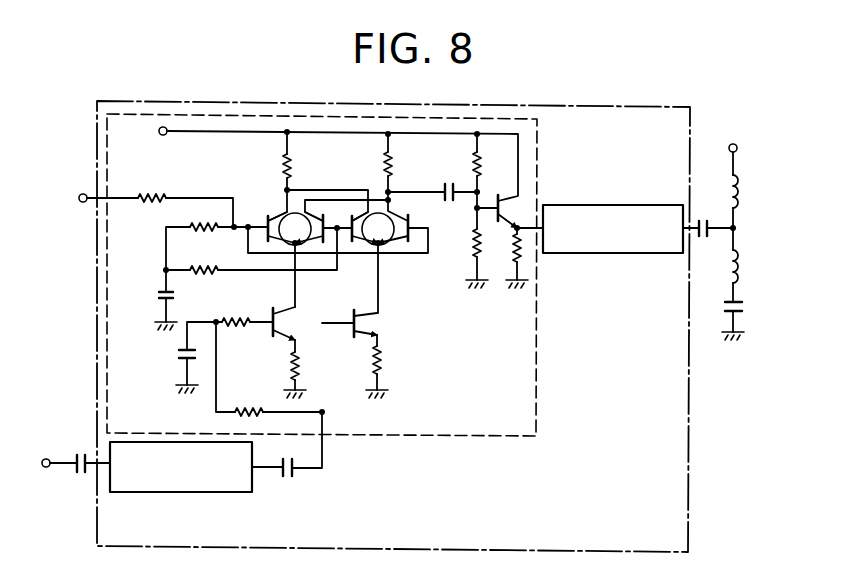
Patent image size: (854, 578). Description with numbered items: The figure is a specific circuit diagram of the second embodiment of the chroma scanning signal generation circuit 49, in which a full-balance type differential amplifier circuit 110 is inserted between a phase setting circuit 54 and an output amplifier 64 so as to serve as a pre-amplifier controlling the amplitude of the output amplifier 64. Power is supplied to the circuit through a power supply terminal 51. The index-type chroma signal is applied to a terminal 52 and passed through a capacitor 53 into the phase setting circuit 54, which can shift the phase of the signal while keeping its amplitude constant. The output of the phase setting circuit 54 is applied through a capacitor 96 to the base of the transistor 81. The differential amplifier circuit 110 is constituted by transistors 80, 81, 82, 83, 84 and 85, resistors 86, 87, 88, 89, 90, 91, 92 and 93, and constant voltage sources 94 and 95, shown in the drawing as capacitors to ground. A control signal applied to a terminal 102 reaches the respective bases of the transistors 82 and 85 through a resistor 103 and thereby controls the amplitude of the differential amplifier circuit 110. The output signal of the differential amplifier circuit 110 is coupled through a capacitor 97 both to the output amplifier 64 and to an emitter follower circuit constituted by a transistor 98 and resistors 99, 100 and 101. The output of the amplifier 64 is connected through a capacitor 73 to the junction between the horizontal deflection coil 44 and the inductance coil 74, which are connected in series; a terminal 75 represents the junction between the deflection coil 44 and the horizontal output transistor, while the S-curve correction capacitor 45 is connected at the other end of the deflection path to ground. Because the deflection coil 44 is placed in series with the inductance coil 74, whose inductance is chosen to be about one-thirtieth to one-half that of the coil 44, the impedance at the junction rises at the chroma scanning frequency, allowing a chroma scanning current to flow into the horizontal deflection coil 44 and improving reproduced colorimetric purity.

The horizontal deflection coil 44 is at (731, 190).
The S-curve correction capacitor 45 is at (742, 306).
The chroma scanning signal generation circuit 49 is at (688, 433).
The power supply terminal 51 is at (160, 135).
The terminal 52 is at (47, 459).
The capacitor 53 is at (81, 474).
The phase setting circuit 54 is at (157, 492).
The output amplifier 64 is at (572, 254).
The capacitor 73 is at (704, 239).
The inductance coil 74 is at (742, 268).
The terminal 75 is at (733, 144).
The transistor 80 is at (292, 314).
The transistor 81 is at (378, 322).
The transistor 82 is at (354, 213).
The transistor 83 is at (295, 229).
The transistor 84 is at (374, 229).
The transistor 85 is at (412, 217).
The resistor 86 is at (292, 364).
The resistor 87 is at (370, 360).
The resistor 88 is at (290, 170).
The resistor 89 is at (391, 172).
The resistor 90 is at (233, 326).
The resistor 91 is at (240, 417).
The resistor 92 is at (205, 231).
The resistor 93 is at (203, 273).
The constant voltage source 94 is at (176, 356).
The constant voltage source 95 is at (160, 293).
The capacitor 96 is at (288, 478).
The capacitor 97 is at (449, 183).
The transistor 98 is at (514, 198).
The resistor 99 is at (479, 168).
The resistor 100 is at (466, 246).
The resistor 101 is at (510, 275).
The terminal 102 is at (82, 203).
The resistor 103 is at (143, 204).
The full-balance type differential amplifier circuit 110 is at (482, 437).